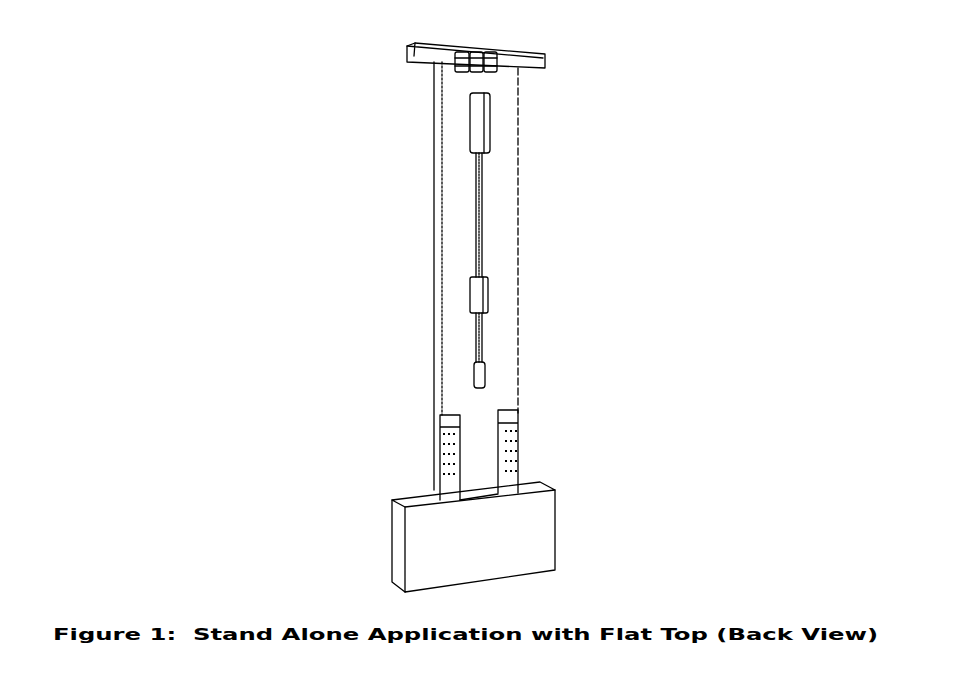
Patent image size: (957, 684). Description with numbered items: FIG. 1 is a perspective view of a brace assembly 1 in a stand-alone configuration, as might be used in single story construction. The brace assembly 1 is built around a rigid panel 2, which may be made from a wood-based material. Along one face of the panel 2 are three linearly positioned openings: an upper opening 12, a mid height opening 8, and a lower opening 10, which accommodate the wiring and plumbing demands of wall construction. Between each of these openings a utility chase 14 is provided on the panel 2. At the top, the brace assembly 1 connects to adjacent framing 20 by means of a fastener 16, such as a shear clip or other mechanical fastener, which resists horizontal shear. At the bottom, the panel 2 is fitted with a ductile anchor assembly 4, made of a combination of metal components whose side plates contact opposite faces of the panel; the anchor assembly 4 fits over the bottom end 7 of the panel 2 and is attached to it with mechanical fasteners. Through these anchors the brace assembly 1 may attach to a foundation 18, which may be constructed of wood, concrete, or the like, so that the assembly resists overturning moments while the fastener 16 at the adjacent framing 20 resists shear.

The brace assembly 1 is at (387, 237).
The panel 2 is at (450, 165).
The ductile anchor assembly 4 is at (437, 442).
The bottom end 7 is at (483, 498).
The mid height opening 8 is at (492, 296).
The lower opening 10 is at (488, 374).
The upper opening 12 is at (492, 125).
The utility chase 14 is at (488, 215).
The fastener 16 is at (500, 73).
The foundation 18 is at (413, 532).
The adjacent framing 20 is at (547, 58).